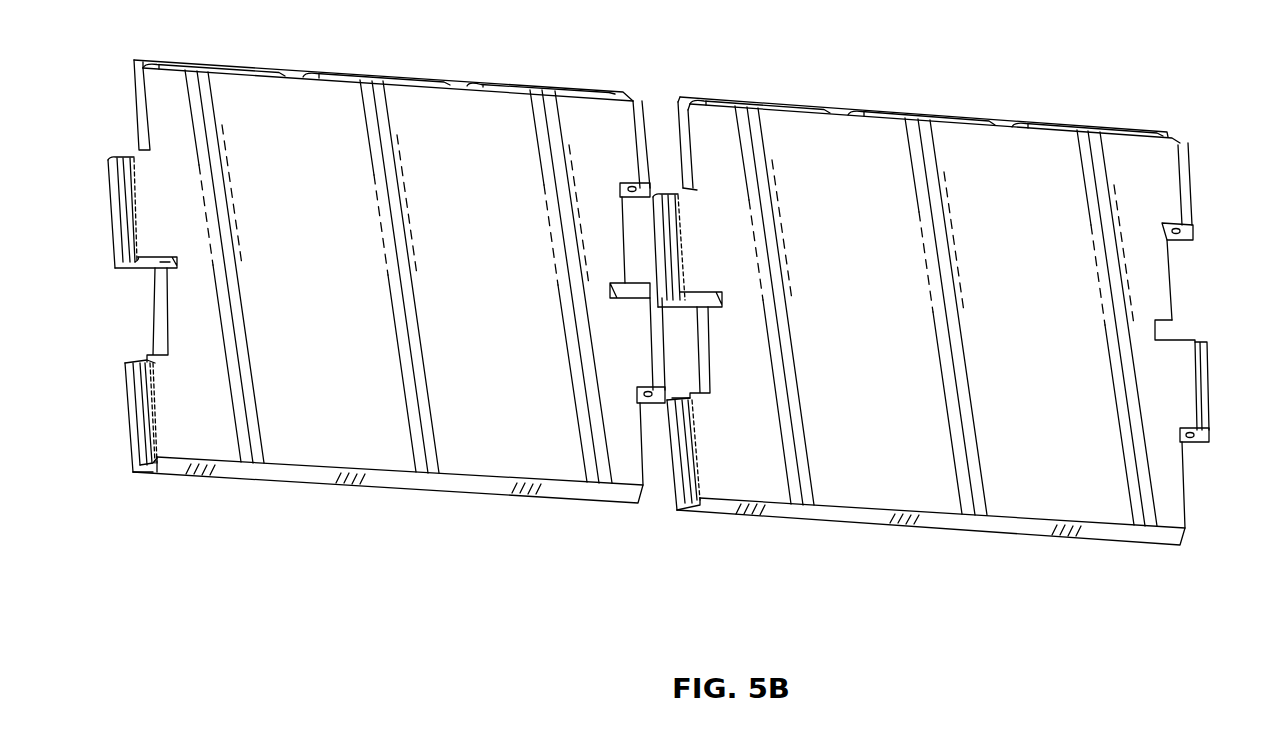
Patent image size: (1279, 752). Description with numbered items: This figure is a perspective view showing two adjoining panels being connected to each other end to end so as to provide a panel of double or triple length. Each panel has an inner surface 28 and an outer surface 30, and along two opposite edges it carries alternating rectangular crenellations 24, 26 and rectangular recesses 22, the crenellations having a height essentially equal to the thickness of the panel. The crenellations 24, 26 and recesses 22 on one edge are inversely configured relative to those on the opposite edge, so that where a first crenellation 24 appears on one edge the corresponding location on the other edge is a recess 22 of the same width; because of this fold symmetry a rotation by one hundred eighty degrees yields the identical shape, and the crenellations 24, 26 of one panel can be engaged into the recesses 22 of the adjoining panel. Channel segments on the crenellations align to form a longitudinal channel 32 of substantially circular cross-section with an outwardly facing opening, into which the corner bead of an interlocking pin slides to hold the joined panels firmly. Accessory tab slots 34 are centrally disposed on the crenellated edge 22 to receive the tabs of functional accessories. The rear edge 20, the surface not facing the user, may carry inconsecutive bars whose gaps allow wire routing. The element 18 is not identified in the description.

The panel bottom edge 18 is at (311, 478).
The rear edge 20 is at (333, 77).
The rectangular recess 22 is at (142, 90).
The first crenellation 24 is at (148, 216).
The crenellation 26 is at (160, 383).
The inner surface 28 is at (344, 346).
The outer surface 30 is at (855, 354).
The longitudinal channel 32 is at (155, 477).
The accessory tab slot 34 is at (160, 270).